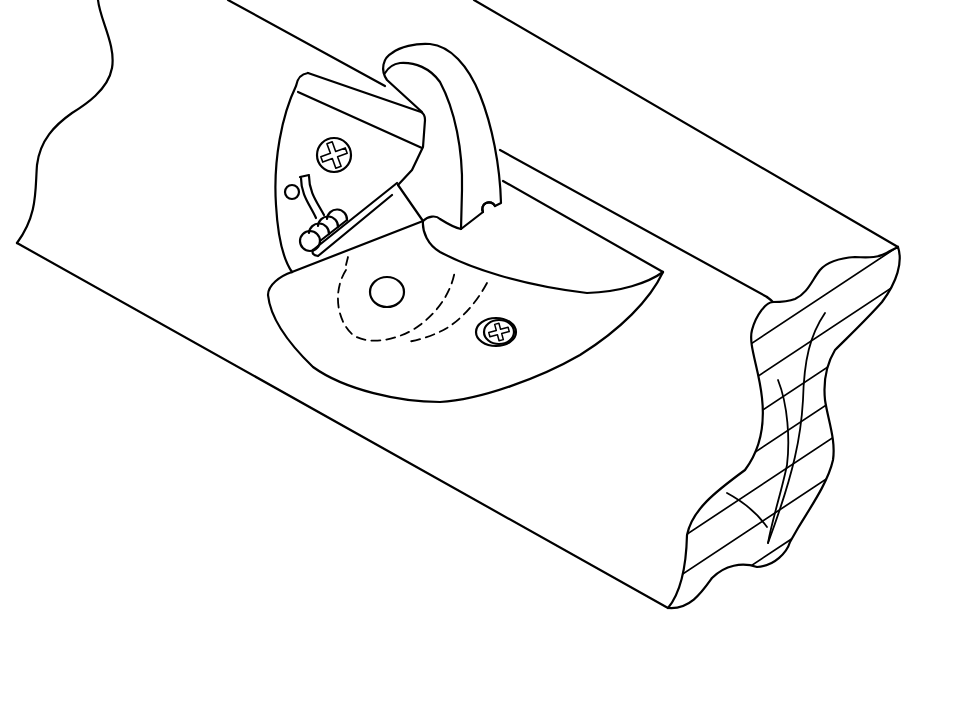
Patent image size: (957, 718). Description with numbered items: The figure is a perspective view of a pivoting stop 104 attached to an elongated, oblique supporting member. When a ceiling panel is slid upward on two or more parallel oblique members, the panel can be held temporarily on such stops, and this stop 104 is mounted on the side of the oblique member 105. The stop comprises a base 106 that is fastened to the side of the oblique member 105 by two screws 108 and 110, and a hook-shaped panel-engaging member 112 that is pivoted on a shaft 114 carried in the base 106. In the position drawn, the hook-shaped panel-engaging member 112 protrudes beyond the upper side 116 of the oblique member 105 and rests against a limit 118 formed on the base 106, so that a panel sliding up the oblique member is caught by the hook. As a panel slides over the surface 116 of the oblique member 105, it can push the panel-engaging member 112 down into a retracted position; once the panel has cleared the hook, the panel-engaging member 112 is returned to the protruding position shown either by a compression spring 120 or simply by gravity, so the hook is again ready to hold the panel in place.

The stop 104 is at (533, 390).
The oblique member 105 is at (512, 492).
The base 106 is at (572, 335).
The screw 108 is at (493, 346).
The screw 110 is at (317, 152).
The hook-shaped panel-engaging member 112 is at (475, 127).
The shaft 114 is at (370, 297).
The upper side 116 is at (673, 178).
The limit 118 is at (497, 210).
The compression spring 120 is at (307, 210).